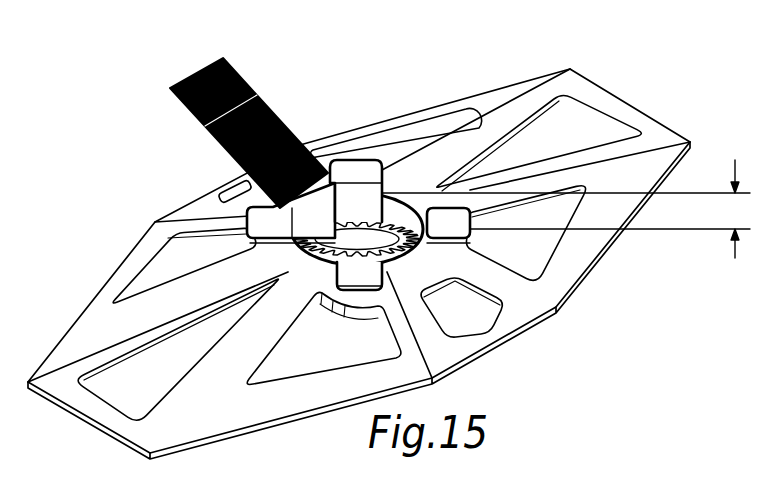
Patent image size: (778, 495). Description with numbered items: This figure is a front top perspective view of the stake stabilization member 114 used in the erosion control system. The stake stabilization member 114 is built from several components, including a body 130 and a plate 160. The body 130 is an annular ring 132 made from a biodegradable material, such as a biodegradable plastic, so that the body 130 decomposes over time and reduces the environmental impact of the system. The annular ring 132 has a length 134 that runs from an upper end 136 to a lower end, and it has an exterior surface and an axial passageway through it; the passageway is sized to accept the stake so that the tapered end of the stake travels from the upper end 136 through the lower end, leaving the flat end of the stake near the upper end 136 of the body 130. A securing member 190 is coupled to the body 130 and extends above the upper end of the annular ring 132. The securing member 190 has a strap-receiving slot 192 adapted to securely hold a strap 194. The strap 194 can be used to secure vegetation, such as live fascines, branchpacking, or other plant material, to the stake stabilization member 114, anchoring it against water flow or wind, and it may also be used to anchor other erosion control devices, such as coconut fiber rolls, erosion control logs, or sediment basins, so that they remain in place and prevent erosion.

The stake stabilization member 114 is at (136, 191).
The body 130 is at (401, 195).
The annular ring 132 is at (283, 233).
The length 134 is at (566, 209).
The upper end 136 is at (315, 255).
The plate 160 is at (609, 100).
The securing member 190 is at (350, 160).
The strap-receiving slot 192 is at (362, 165).
The strap 194 is at (233, 72).